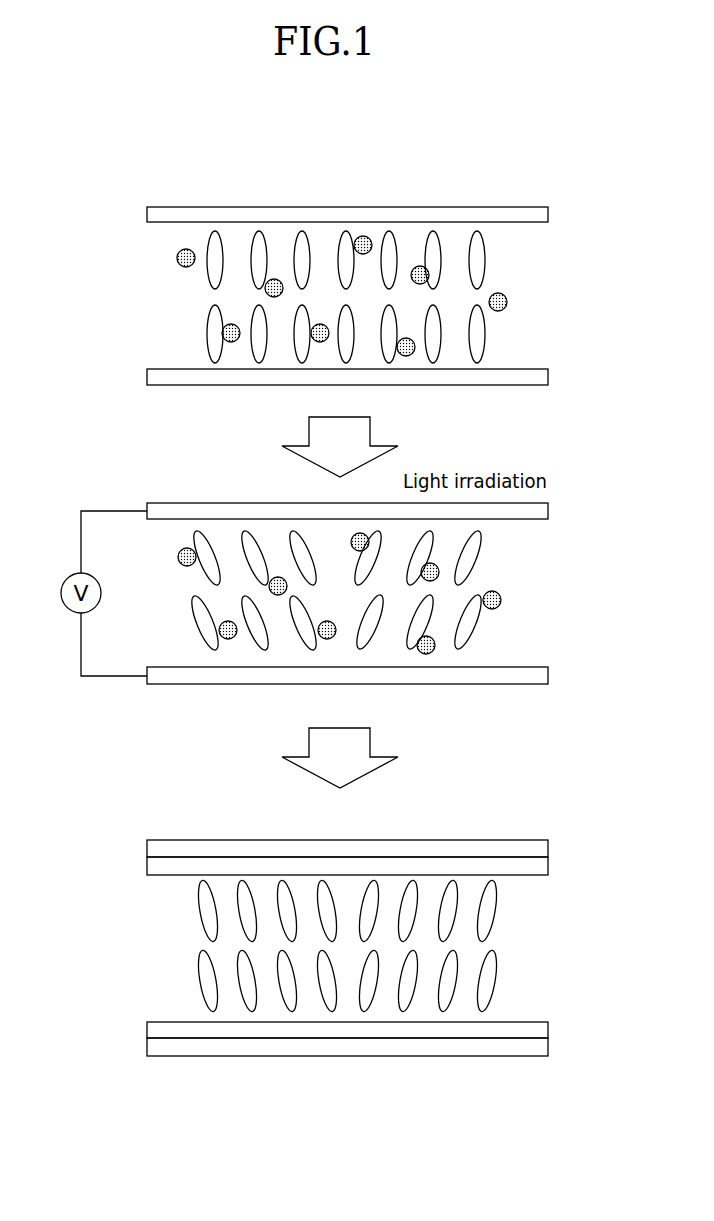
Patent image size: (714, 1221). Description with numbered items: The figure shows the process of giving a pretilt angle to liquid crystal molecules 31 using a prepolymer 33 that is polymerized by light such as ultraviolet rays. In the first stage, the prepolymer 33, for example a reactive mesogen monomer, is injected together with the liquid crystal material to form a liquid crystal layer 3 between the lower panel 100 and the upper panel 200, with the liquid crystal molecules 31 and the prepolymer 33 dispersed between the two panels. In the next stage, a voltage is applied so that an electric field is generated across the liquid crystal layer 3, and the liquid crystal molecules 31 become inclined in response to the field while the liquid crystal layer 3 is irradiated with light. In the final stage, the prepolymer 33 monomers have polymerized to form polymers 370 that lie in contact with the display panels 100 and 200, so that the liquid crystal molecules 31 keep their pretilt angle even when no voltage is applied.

The upper panel 200 is at (146, 214).
The lower panel 100 is at (146, 377).
The liquid crystal layer 3 is at (137, 225).
The liquid crystal molecules 31 is at (485, 259).
The prepolymer 33 is at (507, 302).
The polymers 370 is at (549, 862).